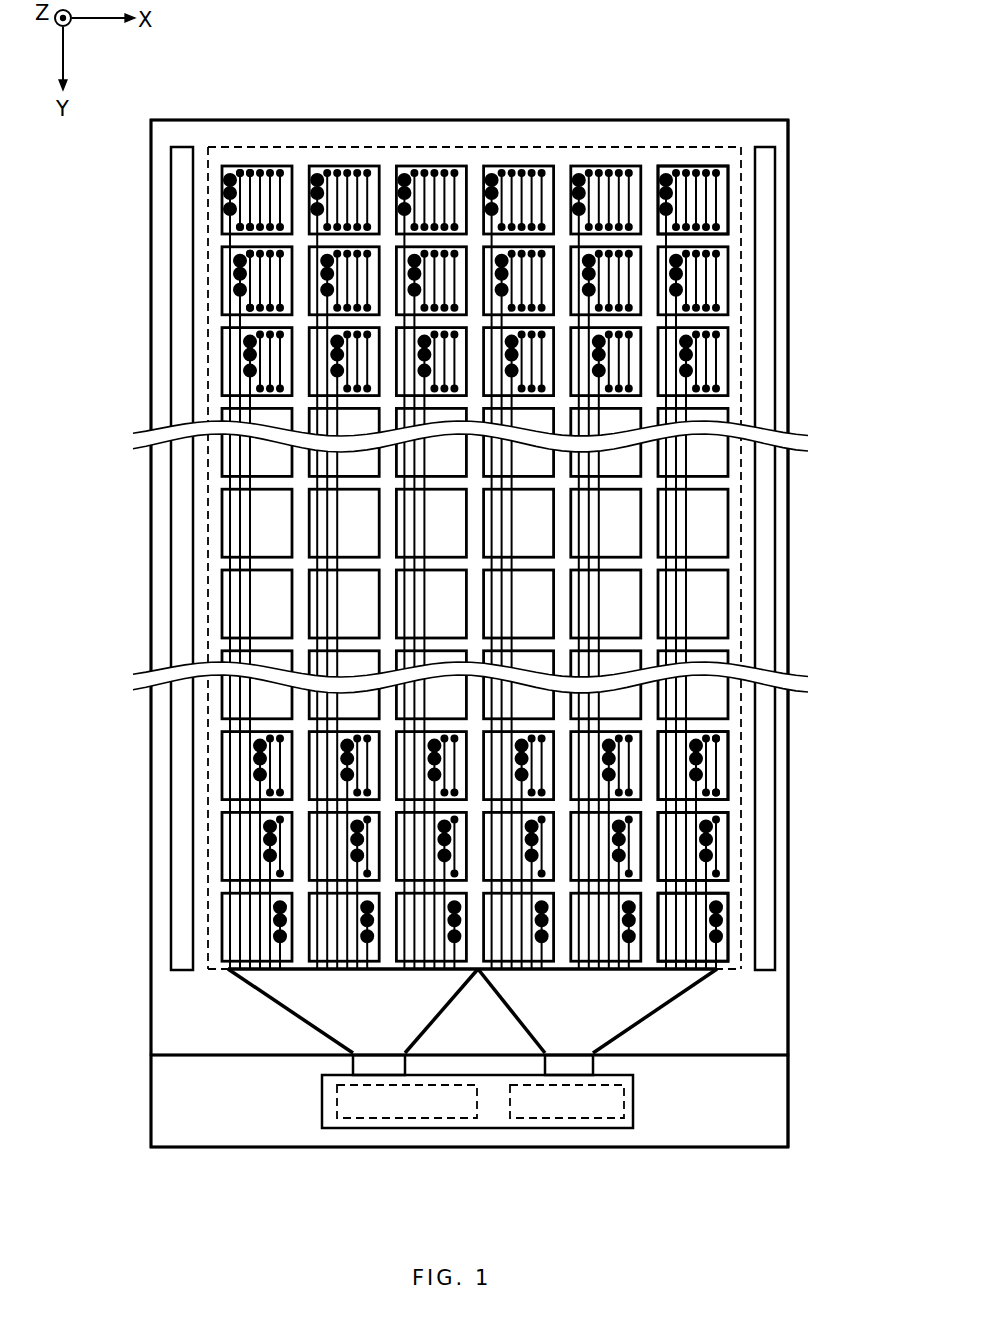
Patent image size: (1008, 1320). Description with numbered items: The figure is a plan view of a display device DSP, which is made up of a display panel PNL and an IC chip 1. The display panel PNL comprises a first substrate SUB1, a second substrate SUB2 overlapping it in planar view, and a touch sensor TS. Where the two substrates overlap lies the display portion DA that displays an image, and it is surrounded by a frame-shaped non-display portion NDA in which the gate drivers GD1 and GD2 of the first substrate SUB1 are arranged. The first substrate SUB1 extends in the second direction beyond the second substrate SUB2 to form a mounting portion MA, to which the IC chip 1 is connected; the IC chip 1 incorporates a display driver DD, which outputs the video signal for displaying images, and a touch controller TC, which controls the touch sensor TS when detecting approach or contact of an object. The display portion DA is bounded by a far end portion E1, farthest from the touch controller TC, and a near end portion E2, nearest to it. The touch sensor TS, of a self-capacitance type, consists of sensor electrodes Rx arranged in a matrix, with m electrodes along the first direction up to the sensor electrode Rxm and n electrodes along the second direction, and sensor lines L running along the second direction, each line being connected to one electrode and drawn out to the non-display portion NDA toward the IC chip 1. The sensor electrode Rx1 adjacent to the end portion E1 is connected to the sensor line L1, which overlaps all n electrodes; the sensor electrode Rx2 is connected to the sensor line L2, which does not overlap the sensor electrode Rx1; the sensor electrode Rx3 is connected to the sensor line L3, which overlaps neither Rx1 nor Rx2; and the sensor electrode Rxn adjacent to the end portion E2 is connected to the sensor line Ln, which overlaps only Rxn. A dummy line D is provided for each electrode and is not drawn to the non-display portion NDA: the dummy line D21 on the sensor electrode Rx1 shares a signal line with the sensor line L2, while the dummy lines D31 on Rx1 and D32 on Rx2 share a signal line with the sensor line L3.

The display device DSP is at (796, 112).
The display panel PNL is at (795, 180).
The first substrate SUB1 is at (770, 1110).
The second substrate SUB2 is at (770, 1025).
The mounting portion MA is at (168, 1107).
The non-display portion NDA is at (782, 551).
The display portion DA is at (750, 497).
The gate driver GD1 is at (177, 492).
The gate driver GD2 is at (768, 290).
The end portion E1 is at (599, 138).
The end portion E2 is at (742, 982).
The touch sensor TS is at (518, 153).
The sensor electrode Rx1 is at (232, 208).
The sensor electrode Rx2 is at (222, 285).
The sensor electrode Rx3 is at (222, 367).
The sensor electrode Rxn is at (222, 913).
The sensor electrode Rxm is at (703, 165).
The sensor electrode Rx is at (728, 770).
The sensor line L1 is at (230, 240).
The sensor line L2 is at (240, 320).
The sensor line L3 is at (250, 401).
The sensor line Ln is at (280, 952).
The sensor line L is at (698, 950).
The dummy line D is at (720, 753).
The dummy line D21 is at (244, 188).
The dummy line D31 is at (262, 198).
The dummy line D32 is at (250, 278).
The IC chip 1 is at (633, 1105).
The display driver DD is at (418, 1120).
The touch controller TC is at (555, 1120).